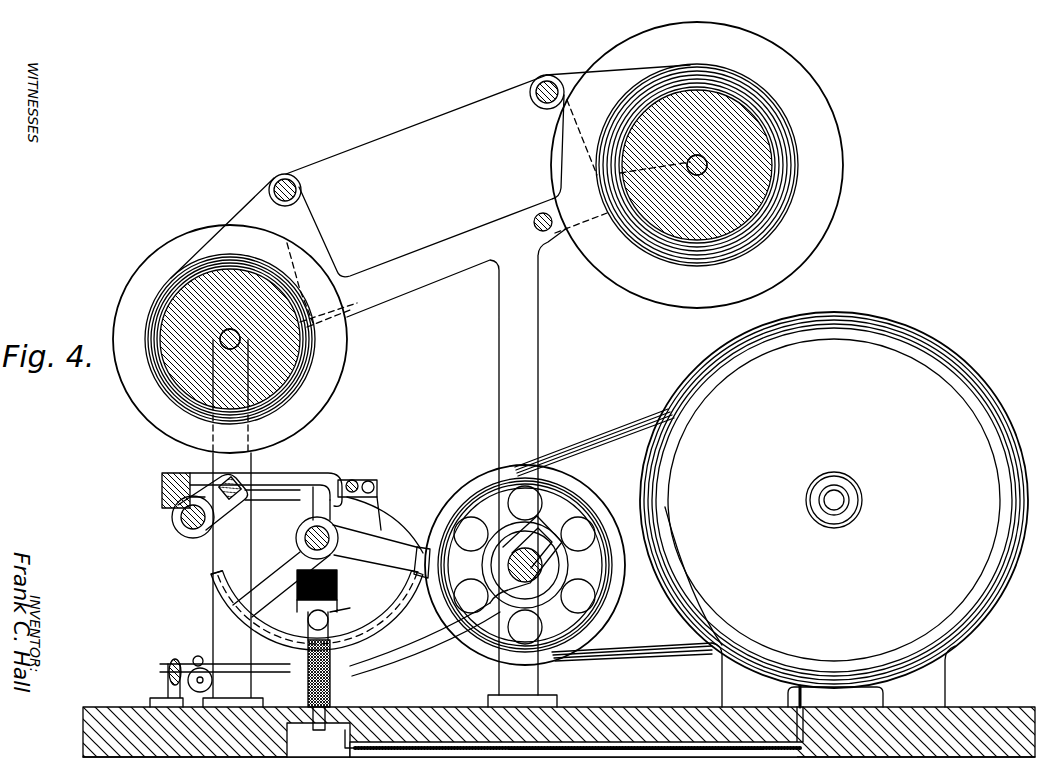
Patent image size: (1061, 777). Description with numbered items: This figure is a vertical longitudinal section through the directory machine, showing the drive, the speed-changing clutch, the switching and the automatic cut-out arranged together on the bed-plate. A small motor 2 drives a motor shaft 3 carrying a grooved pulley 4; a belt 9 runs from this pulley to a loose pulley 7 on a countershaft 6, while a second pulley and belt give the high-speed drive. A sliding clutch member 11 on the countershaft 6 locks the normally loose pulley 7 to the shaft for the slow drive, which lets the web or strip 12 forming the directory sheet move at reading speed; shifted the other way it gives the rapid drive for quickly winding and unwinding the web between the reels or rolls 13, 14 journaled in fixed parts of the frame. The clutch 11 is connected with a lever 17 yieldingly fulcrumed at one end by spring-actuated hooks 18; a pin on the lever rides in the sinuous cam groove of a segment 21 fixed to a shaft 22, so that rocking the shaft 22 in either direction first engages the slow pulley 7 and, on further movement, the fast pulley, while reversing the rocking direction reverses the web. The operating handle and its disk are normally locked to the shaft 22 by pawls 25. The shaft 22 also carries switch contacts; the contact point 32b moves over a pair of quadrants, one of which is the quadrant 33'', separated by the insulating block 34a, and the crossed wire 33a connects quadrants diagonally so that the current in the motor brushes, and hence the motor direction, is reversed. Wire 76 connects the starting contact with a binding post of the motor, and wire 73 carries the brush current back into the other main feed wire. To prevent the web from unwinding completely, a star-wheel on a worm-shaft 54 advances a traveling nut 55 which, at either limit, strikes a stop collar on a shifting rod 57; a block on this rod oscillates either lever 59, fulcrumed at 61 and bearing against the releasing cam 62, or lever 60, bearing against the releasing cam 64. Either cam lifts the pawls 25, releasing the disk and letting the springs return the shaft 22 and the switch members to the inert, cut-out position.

The motor 2 is at (834, 500).
The motor shaft 3 is at (834, 500).
The grooved pulley 4 is at (1004, 684).
The countershaft 6 is at (540, 558).
The loose pulley 7 is at (601, 470).
The belt 9 is at (611, 448).
The sliding clutch member 11 is at (526, 558).
The web or strip 12 is at (432, 122).
The directory reel or roll 13 is at (742, 187).
The directory reel or roll 14 is at (268, 371).
The lever 17 is at (436, 648).
The spring-actuated hooks 18 is at (197, 658).
The segment 21 is at (420, 550).
The shaft 22 is at (356, 570).
The pawls 25 is at (353, 482).
The switch contact point 32b is at (318, 612).
The contact quadrant 33'' is at (197, 588).
The crossed wire 33a is at (426, 616).
The insulating block 34a is at (313, 697).
The worm-shaft 54 is at (192, 534).
The traveling nut 55 is at (180, 518).
The shifting rod 57 is at (238, 482).
The lever 59 is at (323, 474).
The lever 60 is at (300, 488).
The fulcrum 61 is at (172, 472).
The releasing cam 62 is at (330, 532).
The releasing cam 64 is at (281, 565).
The wire 73 is at (546, 752).
The wire 76 is at (338, 612).